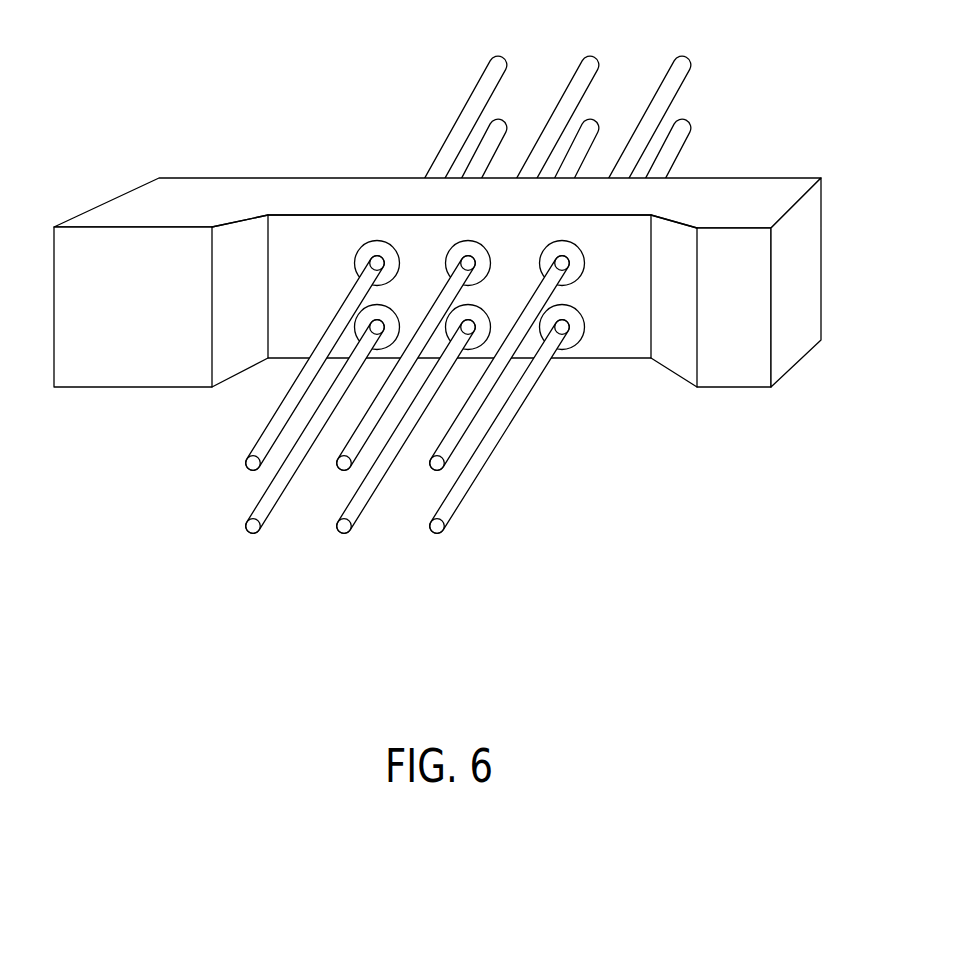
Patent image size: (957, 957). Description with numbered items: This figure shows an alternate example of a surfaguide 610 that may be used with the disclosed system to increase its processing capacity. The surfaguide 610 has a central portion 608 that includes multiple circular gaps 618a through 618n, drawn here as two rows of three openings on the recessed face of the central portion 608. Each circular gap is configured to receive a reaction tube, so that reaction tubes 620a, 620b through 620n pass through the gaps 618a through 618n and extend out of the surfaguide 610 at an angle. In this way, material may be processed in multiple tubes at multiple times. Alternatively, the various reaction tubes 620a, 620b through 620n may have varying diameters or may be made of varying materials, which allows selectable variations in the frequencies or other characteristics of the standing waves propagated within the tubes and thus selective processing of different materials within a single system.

The surfaguide 610 is at (170, 155).
The central portion 608 is at (314, 225).
The circular gap 618a is at (375, 262).
The circular gap 618n is at (573, 341).
The reaction tube 620a is at (240, 479).
The reaction tube 620b is at (246, 546).
The reaction tube 620n is at (446, 550).